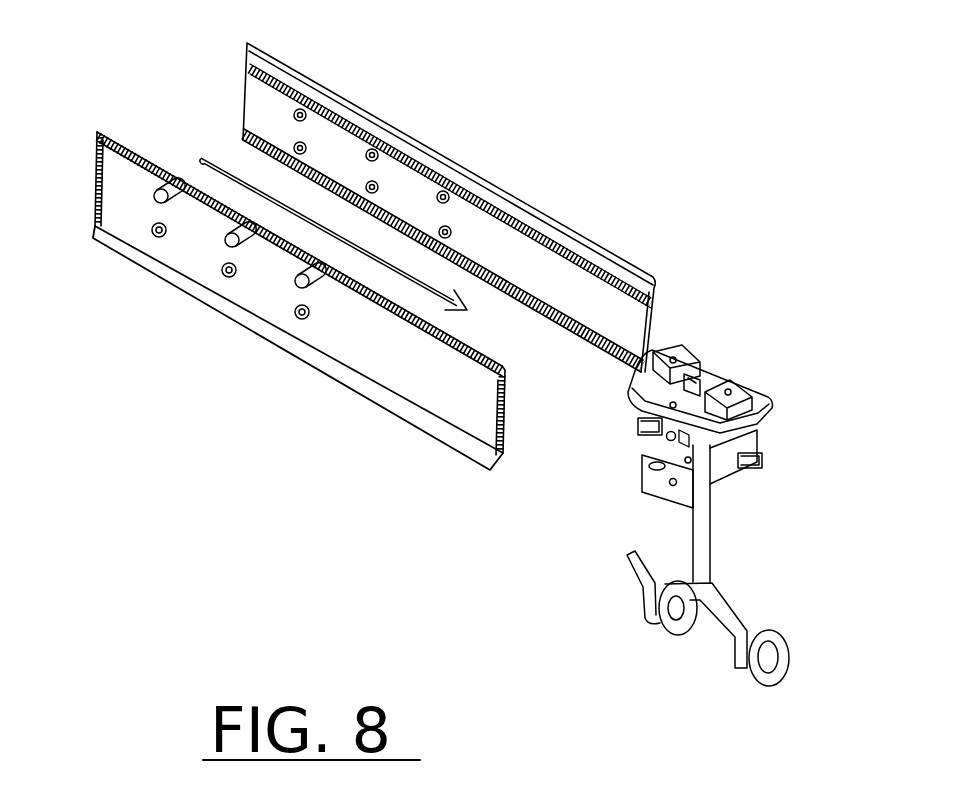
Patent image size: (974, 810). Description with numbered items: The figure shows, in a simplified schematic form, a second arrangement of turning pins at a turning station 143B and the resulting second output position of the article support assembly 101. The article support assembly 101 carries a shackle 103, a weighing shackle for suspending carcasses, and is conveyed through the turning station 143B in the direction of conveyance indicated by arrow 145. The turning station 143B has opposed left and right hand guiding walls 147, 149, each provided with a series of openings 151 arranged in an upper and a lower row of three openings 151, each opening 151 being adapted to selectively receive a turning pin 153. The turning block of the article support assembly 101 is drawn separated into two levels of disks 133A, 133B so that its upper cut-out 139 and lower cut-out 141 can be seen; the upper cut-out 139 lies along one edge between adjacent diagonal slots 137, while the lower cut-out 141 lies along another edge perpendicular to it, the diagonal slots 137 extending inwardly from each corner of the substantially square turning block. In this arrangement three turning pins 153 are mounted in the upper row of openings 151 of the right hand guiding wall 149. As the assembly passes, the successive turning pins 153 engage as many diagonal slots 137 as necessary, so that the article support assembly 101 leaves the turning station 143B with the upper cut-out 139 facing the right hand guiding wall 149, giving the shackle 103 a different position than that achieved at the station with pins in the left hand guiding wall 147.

The article support assembly 101 is at (722, 563).
The shackle 103 is at (645, 610).
The upper level disk of turning block 133A is at (762, 430).
The lower level disk of turning block 133B is at (762, 462).
The diagonal slots 137 is at (670, 440).
The upper cut-out 139 is at (668, 440).
The lower cut-out 141 is at (727, 473).
The turning station 143B is at (577, 173).
The arrow indicating direction of conveyance 145 is at (213, 163).
The left hand guiding wall 147 is at (563, 289).
The right hand guiding wall 149 is at (430, 386).
The openings 151 is at (300, 318).
The turning pins 153 is at (349, 432).